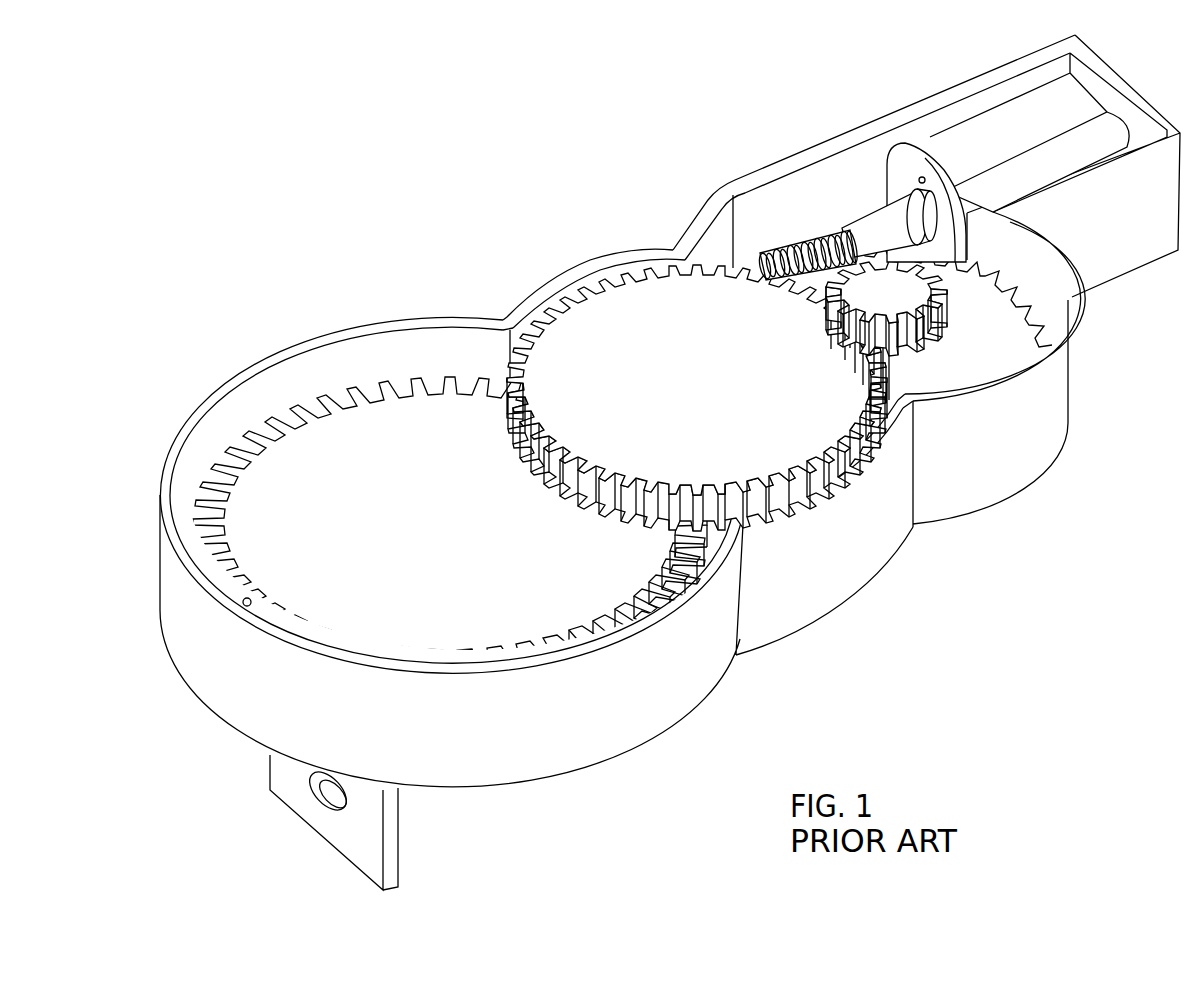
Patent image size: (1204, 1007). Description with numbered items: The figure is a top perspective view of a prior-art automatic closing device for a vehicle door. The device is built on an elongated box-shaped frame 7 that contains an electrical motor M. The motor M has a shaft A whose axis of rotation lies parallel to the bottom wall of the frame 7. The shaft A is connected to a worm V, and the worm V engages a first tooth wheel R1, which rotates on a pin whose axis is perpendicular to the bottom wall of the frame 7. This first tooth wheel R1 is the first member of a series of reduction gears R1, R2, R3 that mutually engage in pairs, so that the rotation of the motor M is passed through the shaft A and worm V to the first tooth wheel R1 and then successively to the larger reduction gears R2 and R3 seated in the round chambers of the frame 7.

The frame 7 is at (564, 737).
The first tooth wheel R1 is at (940, 370).
The reduction gear R2 is at (755, 432).
The reduction gear R3 is at (610, 585).
The electrical motor M is at (967, 142).
The shaft A is at (880, 223).
The worm V is at (800, 240).